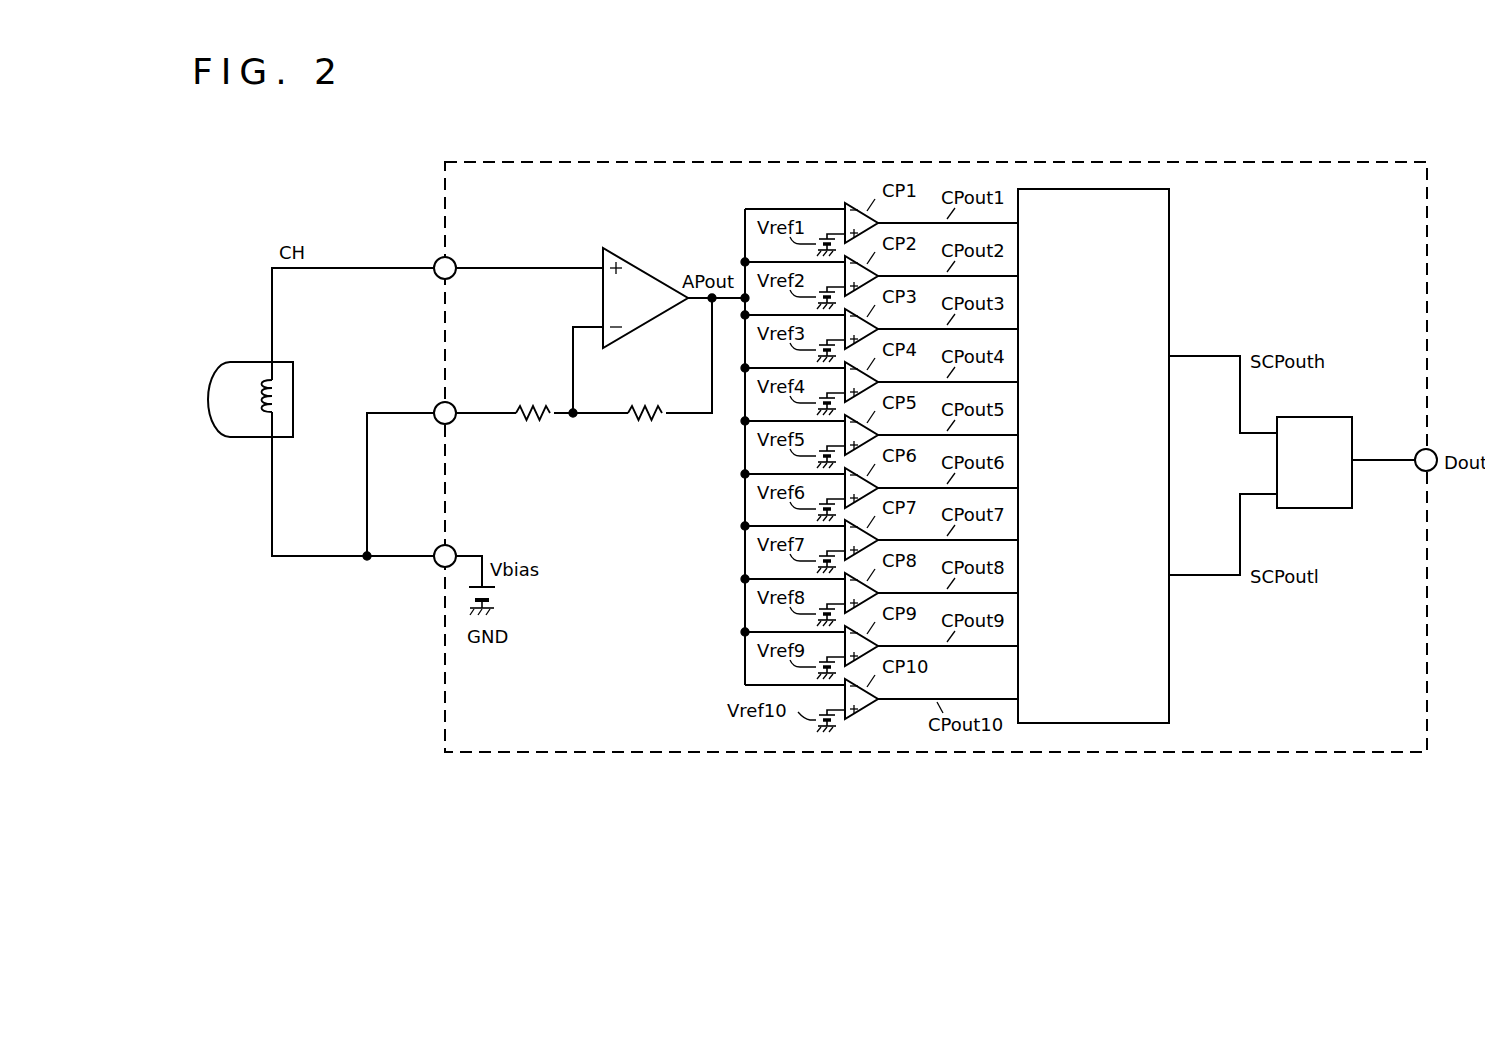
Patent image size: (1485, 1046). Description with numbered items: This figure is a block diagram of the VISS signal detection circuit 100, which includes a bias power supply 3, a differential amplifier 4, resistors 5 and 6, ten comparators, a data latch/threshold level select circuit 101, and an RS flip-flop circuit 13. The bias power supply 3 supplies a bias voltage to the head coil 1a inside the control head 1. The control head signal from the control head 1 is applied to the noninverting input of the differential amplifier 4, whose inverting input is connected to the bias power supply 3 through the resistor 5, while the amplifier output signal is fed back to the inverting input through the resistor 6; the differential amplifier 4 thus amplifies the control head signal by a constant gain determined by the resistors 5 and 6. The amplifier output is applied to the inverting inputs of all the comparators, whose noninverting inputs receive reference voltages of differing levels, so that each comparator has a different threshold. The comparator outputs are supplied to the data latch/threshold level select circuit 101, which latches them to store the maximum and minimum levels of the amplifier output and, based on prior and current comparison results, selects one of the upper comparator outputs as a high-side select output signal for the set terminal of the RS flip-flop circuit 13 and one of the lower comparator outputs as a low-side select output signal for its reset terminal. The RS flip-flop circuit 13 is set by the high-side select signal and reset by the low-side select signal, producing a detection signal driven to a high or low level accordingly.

The control head 1 is at (250, 398).
The head coil 1a is at (262, 418).
The bias power supply 3 is at (495, 595).
The differential amplifier 4 is at (639, 263).
The resistor 5 is at (537, 427).
The resistor 6 is at (646, 427).
The RS flip-flop circuit 13 is at (1338, 417).
The VISS signal detection circuit 100 is at (1336, 160).
The data latch/threshold level select circuit 101 is at (1169, 242).